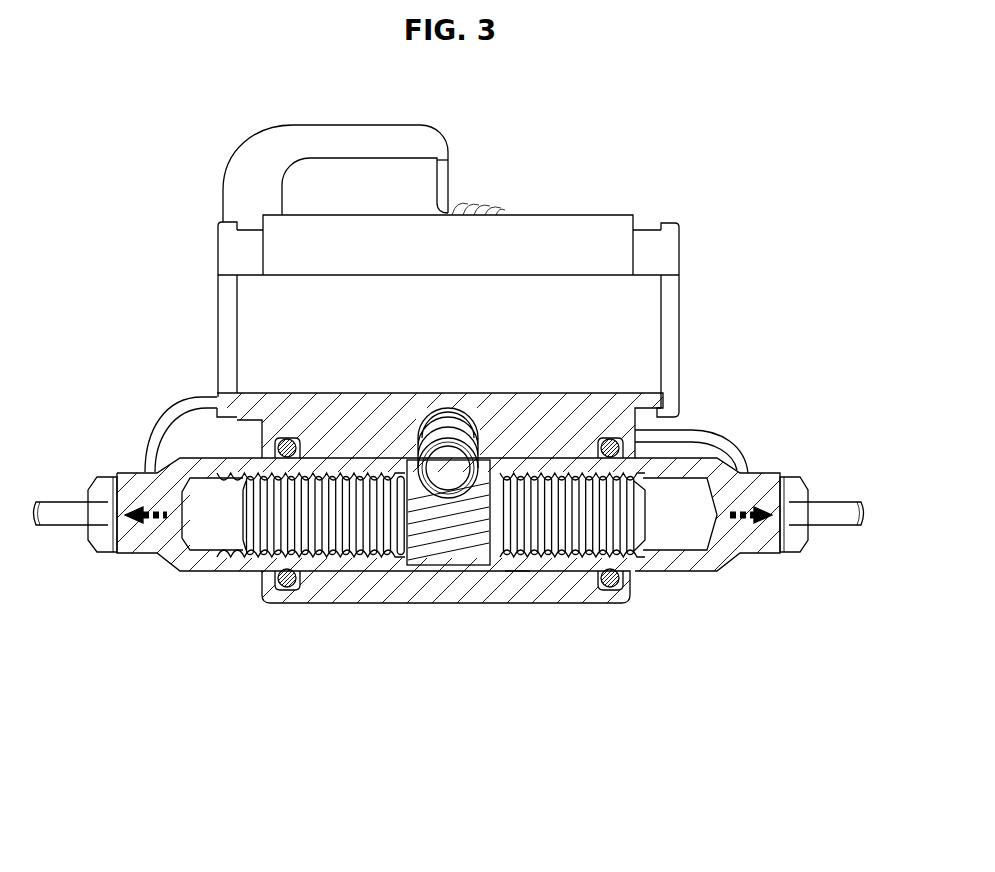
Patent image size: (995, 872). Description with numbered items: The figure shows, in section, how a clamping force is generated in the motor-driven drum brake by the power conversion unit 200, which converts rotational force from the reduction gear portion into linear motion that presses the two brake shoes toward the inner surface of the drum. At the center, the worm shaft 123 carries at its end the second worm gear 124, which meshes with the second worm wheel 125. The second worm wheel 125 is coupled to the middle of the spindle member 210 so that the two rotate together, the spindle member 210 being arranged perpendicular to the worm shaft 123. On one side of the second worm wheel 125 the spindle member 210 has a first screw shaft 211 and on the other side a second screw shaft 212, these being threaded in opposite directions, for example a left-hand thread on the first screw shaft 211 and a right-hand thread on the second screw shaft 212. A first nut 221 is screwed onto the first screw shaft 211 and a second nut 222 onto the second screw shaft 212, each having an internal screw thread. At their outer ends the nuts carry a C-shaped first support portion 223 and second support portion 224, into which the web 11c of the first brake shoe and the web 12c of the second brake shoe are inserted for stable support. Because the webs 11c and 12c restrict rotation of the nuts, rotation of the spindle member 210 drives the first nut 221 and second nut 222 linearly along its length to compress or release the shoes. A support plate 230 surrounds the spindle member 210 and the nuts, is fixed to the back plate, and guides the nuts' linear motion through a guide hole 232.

The web 11c is at (57, 508).
The web 12c is at (840, 507).
The worm shaft 123 is at (435, 465).
The second worm gear 124 is at (455, 417).
The second worm wheel 125 is at (433, 548).
The power conversion unit 200 is at (497, 440).
The spindle member 210 is at (451, 500).
The first screw shaft 211 is at (362, 468).
The second screw shaft 212 is at (535, 470).
The first nut 221 is at (205, 562).
The second nut 222 is at (693, 568).
The first support portion 223 is at (104, 547).
The second support portion 224 is at (795, 545).
The support plate 230 is at (347, 592).
The guide hole 232 is at (518, 571).